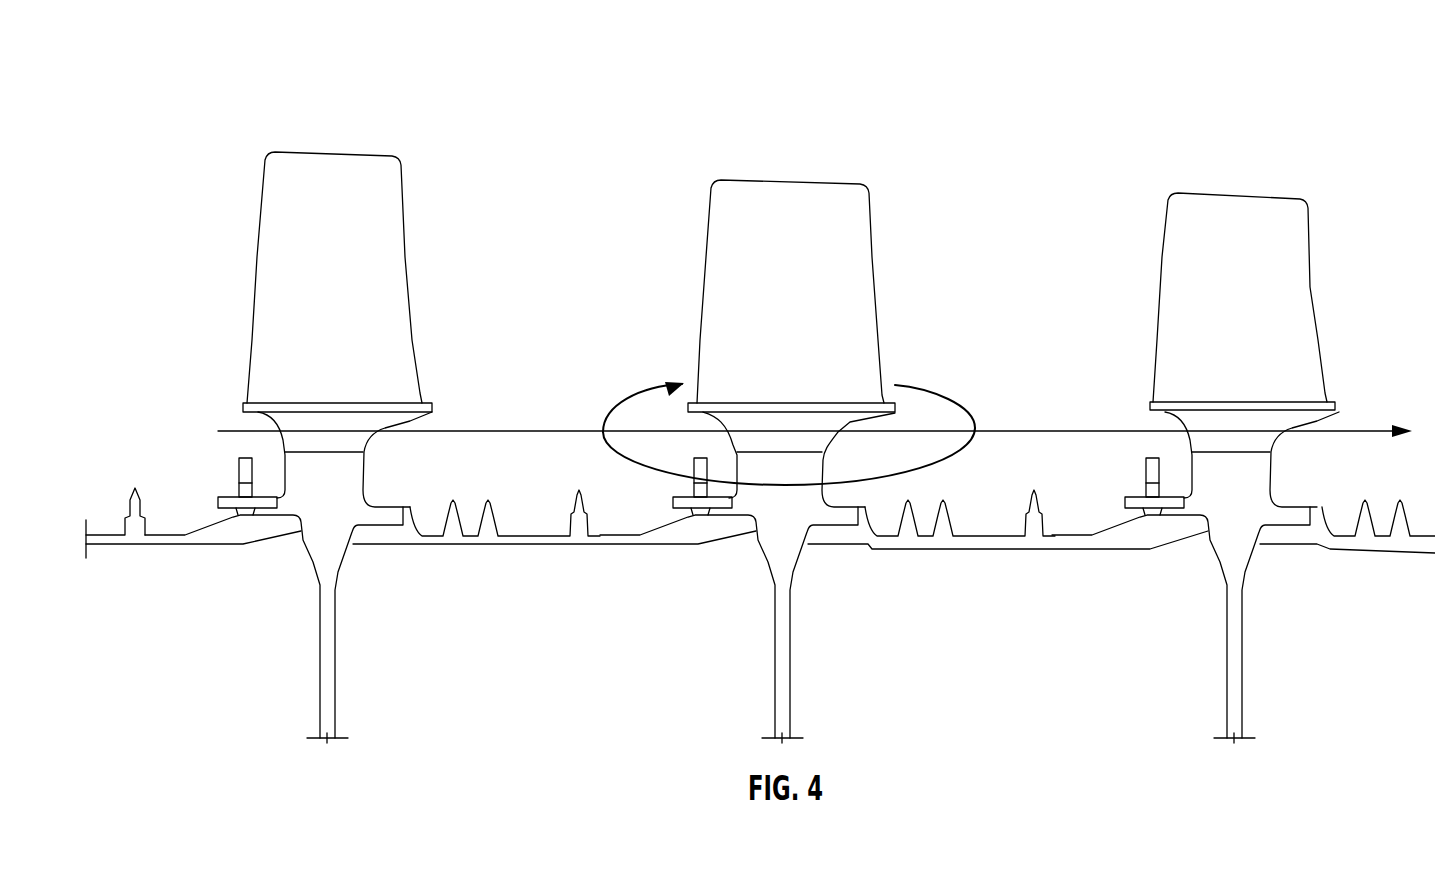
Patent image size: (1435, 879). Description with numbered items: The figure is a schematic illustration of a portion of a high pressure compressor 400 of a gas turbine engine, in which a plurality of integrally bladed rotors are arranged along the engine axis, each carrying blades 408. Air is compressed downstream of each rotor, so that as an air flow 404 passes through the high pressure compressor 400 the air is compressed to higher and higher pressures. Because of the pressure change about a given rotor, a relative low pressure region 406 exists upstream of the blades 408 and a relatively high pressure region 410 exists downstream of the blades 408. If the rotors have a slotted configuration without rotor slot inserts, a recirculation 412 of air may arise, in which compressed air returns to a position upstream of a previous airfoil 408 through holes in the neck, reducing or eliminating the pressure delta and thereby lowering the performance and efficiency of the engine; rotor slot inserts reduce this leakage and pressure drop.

The high pressure compressor 400 is at (466, 76).
The air flow 404 is at (1358, 425).
The relative low pressure region 406 is at (584, 352).
The blade 408 is at (781, 198).
The relatively high pressure region 410 is at (1067, 356).
The recirculation 412 is at (935, 393).